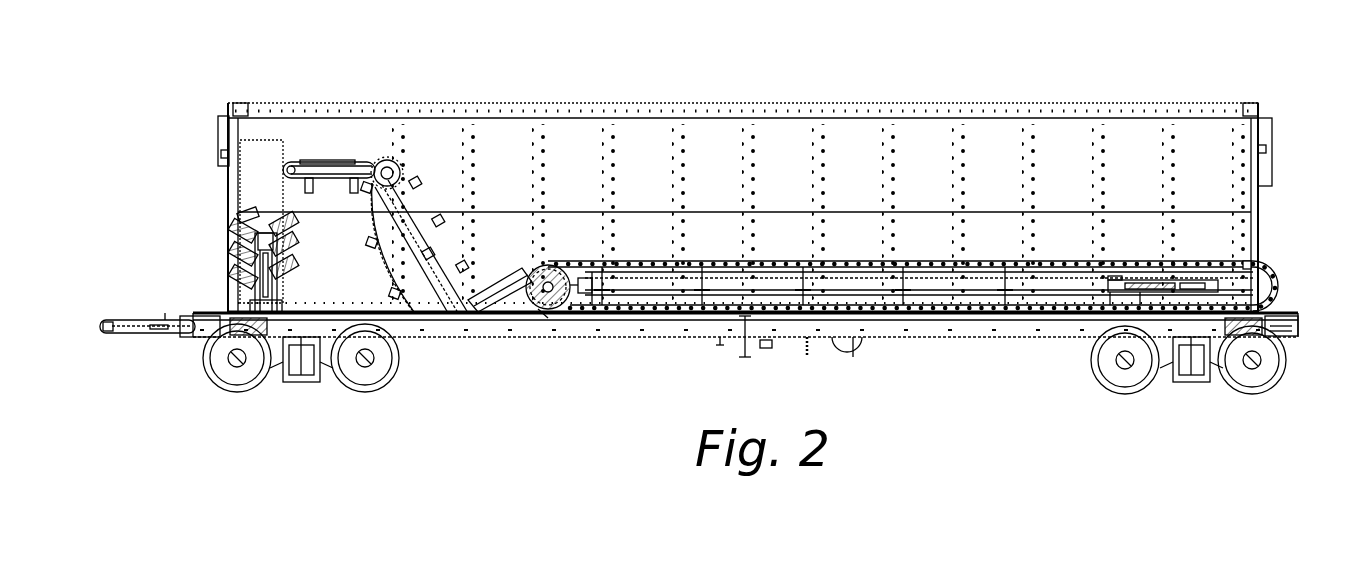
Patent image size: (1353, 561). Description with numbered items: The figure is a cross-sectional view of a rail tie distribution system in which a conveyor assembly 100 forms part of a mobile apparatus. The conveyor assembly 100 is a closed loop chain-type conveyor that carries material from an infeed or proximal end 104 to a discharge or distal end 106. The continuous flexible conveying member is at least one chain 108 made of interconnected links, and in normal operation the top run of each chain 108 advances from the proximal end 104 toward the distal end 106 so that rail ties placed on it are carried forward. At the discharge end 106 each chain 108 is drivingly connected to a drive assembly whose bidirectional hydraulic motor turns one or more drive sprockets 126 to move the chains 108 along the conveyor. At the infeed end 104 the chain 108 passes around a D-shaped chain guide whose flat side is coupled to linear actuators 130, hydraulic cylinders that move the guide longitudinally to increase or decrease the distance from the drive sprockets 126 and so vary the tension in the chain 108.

The conveyor assembly 100 is at (903, 326).
The infeed or proximal end 104 is at (1239, 233).
The discharge or distal end 106 is at (560, 232).
The chain 108 is at (1266, 262).
The drive sprocket 126 is at (540, 316).
The linear actuator 130 is at (1115, 285).